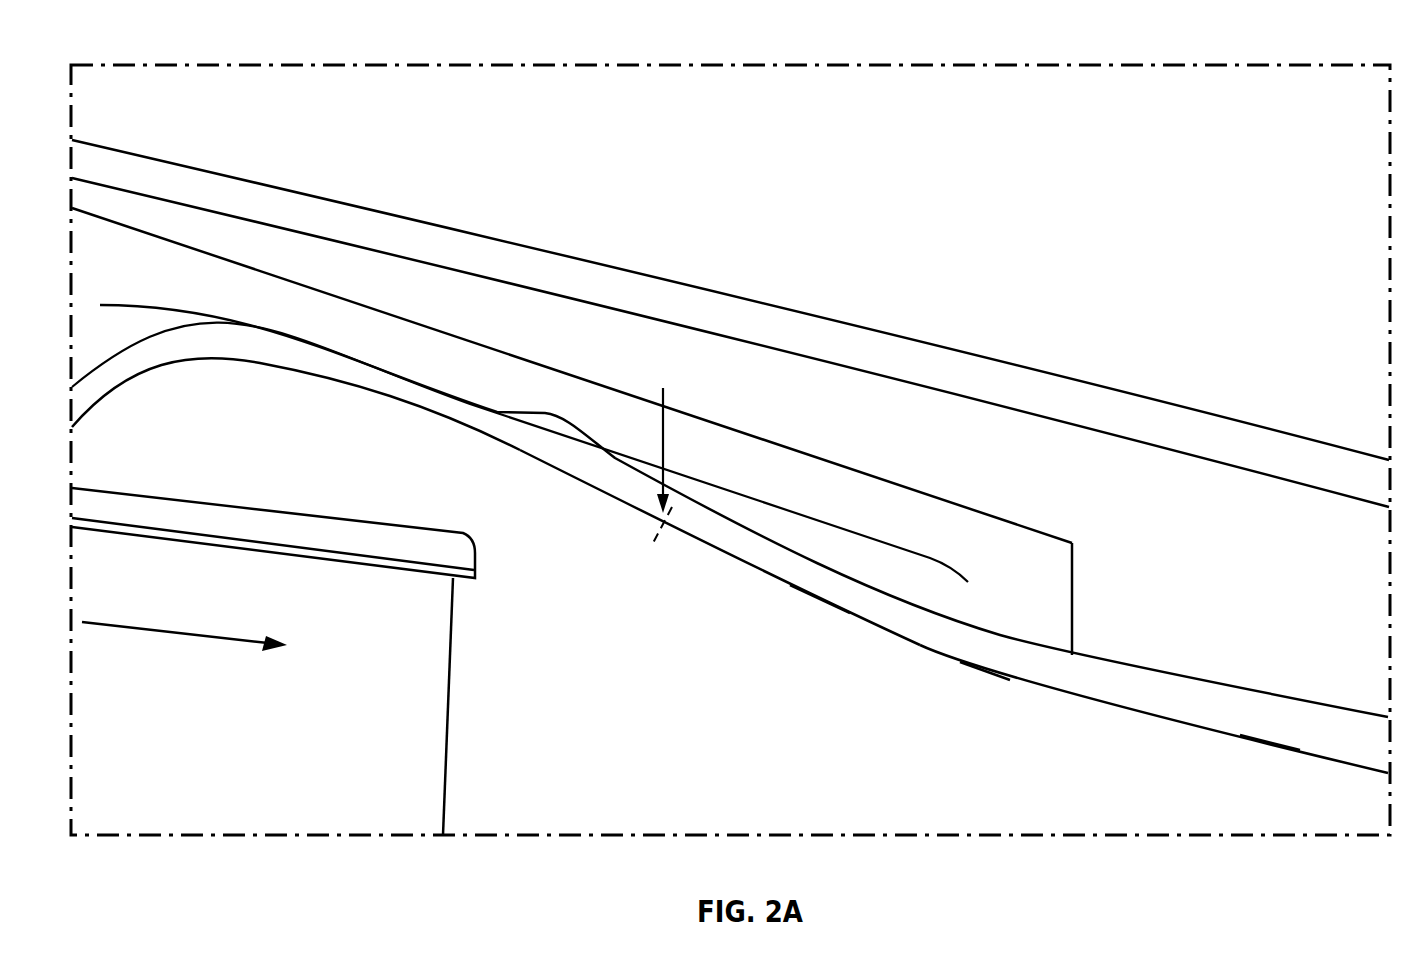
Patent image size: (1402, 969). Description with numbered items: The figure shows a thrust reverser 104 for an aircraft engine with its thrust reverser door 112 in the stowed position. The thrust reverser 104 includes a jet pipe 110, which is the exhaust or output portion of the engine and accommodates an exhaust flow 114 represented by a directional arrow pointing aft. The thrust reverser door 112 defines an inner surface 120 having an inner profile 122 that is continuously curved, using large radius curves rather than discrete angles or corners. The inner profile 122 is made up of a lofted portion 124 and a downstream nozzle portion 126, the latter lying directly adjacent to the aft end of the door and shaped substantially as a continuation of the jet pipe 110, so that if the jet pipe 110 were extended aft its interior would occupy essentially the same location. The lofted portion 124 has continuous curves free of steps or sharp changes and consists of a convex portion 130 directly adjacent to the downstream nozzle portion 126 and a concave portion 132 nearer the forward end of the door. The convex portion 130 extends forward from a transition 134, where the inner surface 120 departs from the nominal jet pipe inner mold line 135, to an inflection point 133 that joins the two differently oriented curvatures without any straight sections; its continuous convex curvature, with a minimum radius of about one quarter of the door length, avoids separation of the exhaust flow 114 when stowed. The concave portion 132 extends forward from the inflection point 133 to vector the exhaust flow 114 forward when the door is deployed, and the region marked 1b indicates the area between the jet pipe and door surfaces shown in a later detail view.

The thrust reverser 104 is at (1314, 44).
The jet pipe 110 is at (435, 748).
The thrust reverser door 112 is at (832, 322).
The exhaust flow 114 is at (180, 636).
The inner surface 120 is at (1032, 698).
The inner profile 122 is at (987, 674).
The lofted portion 124 is at (744, 511).
The downstream nozzle portion 126 is at (1267, 751).
The convex portion 130 is at (757, 571).
The concave portion 132 is at (130, 375).
The inflection point 133 is at (653, 525).
The transition 134 is at (909, 700).
The nominal jet pipe inner mold line 135 is at (818, 609).
The region between jetpipe IML and door IML 1b is at (348, 398).